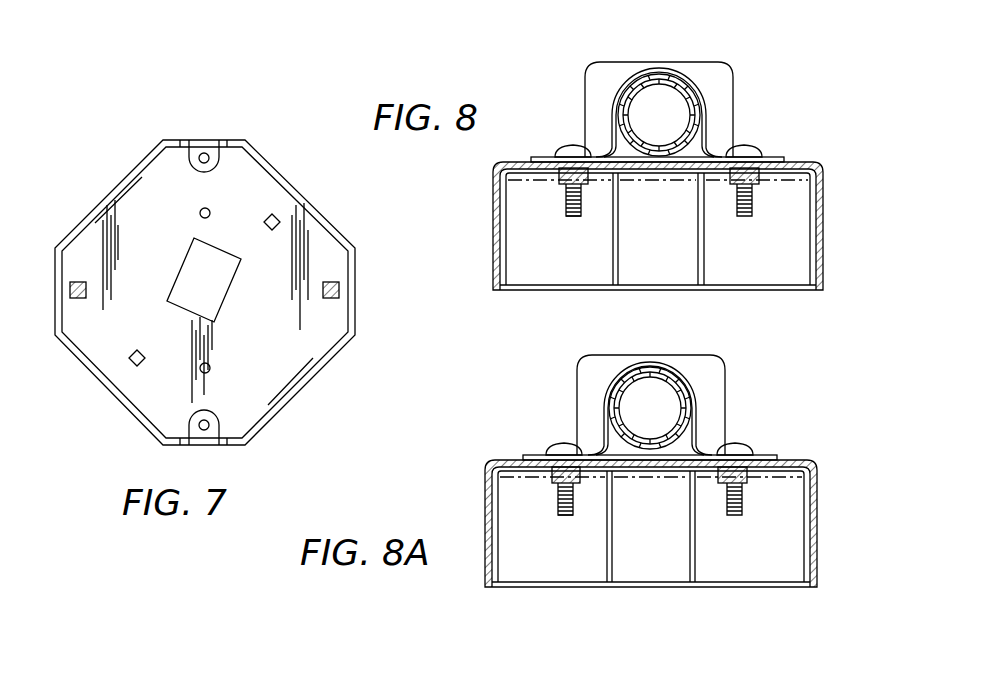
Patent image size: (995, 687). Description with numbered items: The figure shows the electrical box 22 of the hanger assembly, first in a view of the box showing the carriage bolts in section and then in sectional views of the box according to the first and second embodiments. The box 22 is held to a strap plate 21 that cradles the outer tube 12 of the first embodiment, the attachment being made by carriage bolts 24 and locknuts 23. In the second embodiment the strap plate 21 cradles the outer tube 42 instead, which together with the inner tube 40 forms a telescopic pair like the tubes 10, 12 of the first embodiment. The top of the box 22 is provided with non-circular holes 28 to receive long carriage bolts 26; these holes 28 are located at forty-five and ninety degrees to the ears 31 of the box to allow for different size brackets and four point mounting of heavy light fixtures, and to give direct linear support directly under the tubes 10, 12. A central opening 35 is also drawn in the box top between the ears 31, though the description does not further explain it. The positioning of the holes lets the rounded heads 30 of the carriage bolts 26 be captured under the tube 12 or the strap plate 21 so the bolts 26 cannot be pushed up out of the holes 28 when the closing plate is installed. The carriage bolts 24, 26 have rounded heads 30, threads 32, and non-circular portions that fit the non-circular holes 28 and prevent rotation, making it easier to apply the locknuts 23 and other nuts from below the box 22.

In FIG. 8, the inner tube 10 is at (618, 112).
In FIG. 8, the outer tube 12 is at (658, 76).
In FIG. 8, the strap plate 21 is at (708, 110).
In FIG. 8A, the strap plate 21 is at (698, 410).
In FIG. 8, the electrical box 22 is at (661, 170).
In FIG. 8A, the electrical box 22 is at (655, 463).
In FIG. 8, the locknuts 23 is at (558, 177).
In FIG. 8A, the locknuts 23 is at (550, 478).
In FIG. 7, the carriage bolts 24 is at (285, 368).
In FIG. 7, the long carriage bolts 26 is at (88, 282).
In FIG. 8, the long carriage bolts 26 is at (578, 215).
In FIG. 8A, the long carriage bolts 26 is at (570, 517).
In FIG. 7, the non-circular holes 28 is at (278, 217).
In FIG. 8, the rounded heads 30 is at (758, 150).
In FIG. 8A, the rounded heads 30 is at (748, 446).
In FIG. 7, the ears 31 is at (198, 143).
In FIG. 8, the threads 32 is at (752, 197).
In FIG. 8A, the threads 32 is at (743, 497).
In FIG. 7, the rectangular opening 35 is at (207, 263).
In FIG. 8A, the inner tube 40 is at (627, 405).
In FIG. 8A, the outer tube 42 is at (648, 369).